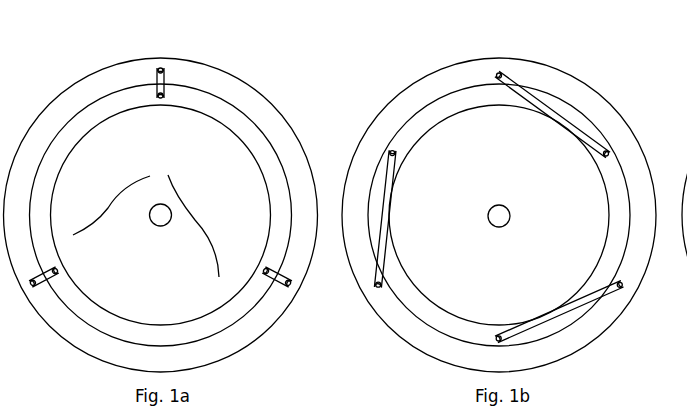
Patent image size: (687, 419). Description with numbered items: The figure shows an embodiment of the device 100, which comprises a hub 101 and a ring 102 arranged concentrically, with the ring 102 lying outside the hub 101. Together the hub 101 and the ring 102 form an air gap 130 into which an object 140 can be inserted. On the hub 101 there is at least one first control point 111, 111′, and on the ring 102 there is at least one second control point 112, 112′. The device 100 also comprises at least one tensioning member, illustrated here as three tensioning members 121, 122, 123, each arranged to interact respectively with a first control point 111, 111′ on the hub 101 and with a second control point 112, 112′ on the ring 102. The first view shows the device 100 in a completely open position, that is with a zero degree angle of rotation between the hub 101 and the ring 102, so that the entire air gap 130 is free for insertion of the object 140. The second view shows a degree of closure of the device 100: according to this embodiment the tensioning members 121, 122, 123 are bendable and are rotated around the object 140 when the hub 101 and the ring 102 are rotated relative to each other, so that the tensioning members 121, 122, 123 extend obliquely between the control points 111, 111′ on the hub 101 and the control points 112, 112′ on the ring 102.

In FIG. 1A, the device 100 is at (283, 47).
In FIG. 1A, the air gap 130 is at (182, 117).
In FIG. 1B, the ring 102 is at (402, 108).
In FIG. 1B, the hub 101 is at (421, 288).
In FIG. 1B, the object 140 is at (511, 217).
In FIG. 1B, the tensioning member 121 is at (568, 130).
In FIG. 1B, the tensioning member 122 is at (543, 314).
In FIG. 1B, the tensioning member 123 is at (394, 197).
In FIG. 1B, the first control point 111 is at (612, 147).
In FIG. 1B, the first control point 111′ is at (508, 343).
In FIG. 1B, the second control point 112 is at (502, 68).
In FIG. 1B, the second control point 112′ is at (628, 287).